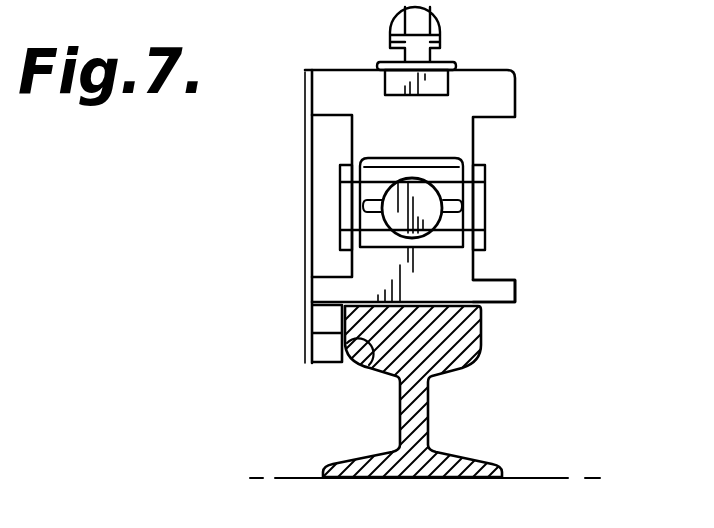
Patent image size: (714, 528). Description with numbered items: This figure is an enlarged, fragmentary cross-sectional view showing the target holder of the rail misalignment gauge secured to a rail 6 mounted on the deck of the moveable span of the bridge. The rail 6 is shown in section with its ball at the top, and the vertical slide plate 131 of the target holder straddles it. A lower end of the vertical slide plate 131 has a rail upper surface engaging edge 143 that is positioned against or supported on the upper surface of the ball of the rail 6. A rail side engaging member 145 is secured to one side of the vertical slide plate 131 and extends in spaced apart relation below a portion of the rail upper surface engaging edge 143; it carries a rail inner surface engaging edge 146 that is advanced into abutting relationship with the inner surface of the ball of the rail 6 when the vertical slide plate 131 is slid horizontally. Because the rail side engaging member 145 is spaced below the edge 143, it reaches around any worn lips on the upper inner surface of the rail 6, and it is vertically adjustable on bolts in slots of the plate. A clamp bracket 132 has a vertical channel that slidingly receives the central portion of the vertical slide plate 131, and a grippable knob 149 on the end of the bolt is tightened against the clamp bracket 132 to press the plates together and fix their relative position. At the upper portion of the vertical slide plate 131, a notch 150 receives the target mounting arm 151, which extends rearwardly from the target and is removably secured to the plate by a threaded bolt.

The rail 6 is at (478, 358).
The vertical slide plate 131 is at (516, 118).
The clamp bracket 132 is at (491, 198).
The rail upper surface engaging edge 143 is at (499, 304).
The rail side engaging member 145 is at (313, 367).
The rail inner surface engaging edge 146 is at (369, 367).
The grippable knob 149 is at (418, 187).
The notch 150 is at (440, 87).
The target mounting arm 151 is at (388, 80).